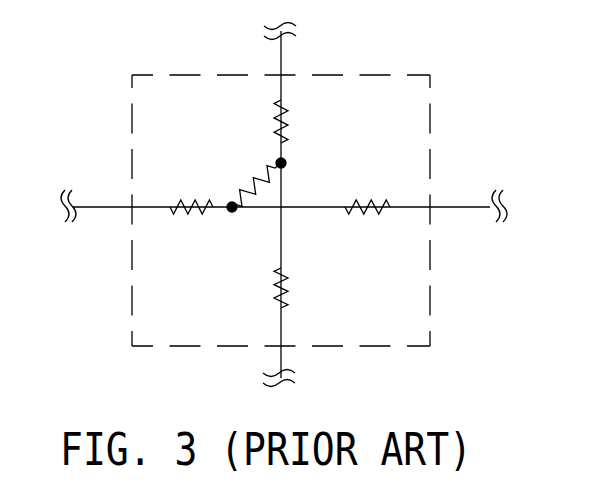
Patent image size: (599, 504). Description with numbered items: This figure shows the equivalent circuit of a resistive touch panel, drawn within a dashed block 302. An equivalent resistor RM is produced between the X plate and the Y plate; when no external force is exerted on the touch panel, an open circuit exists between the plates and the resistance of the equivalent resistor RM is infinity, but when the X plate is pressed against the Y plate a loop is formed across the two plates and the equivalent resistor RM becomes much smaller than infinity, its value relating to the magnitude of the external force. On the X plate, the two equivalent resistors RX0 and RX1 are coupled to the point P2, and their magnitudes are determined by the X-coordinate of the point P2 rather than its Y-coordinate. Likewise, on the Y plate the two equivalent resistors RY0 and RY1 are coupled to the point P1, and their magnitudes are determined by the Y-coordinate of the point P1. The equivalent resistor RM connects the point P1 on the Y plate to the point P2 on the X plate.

The resistive touch panel equivalent circuit block 302 is at (377, 75).
The equivalent resistor on the Y plate RY1 is at (301, 122).
The equivalent resistor on the Y plate RY0 is at (301, 288).
The equivalent resistor on the X plate RX1 is at (191, 224).
The equivalent resistor on the X plate RX0 is at (367, 223).
The equivalent resistor between the X plate and the Y plate RM is at (249, 179).
The point on the Y plate P1 is at (296, 167).
The point on the X plate P2 is at (241, 225).